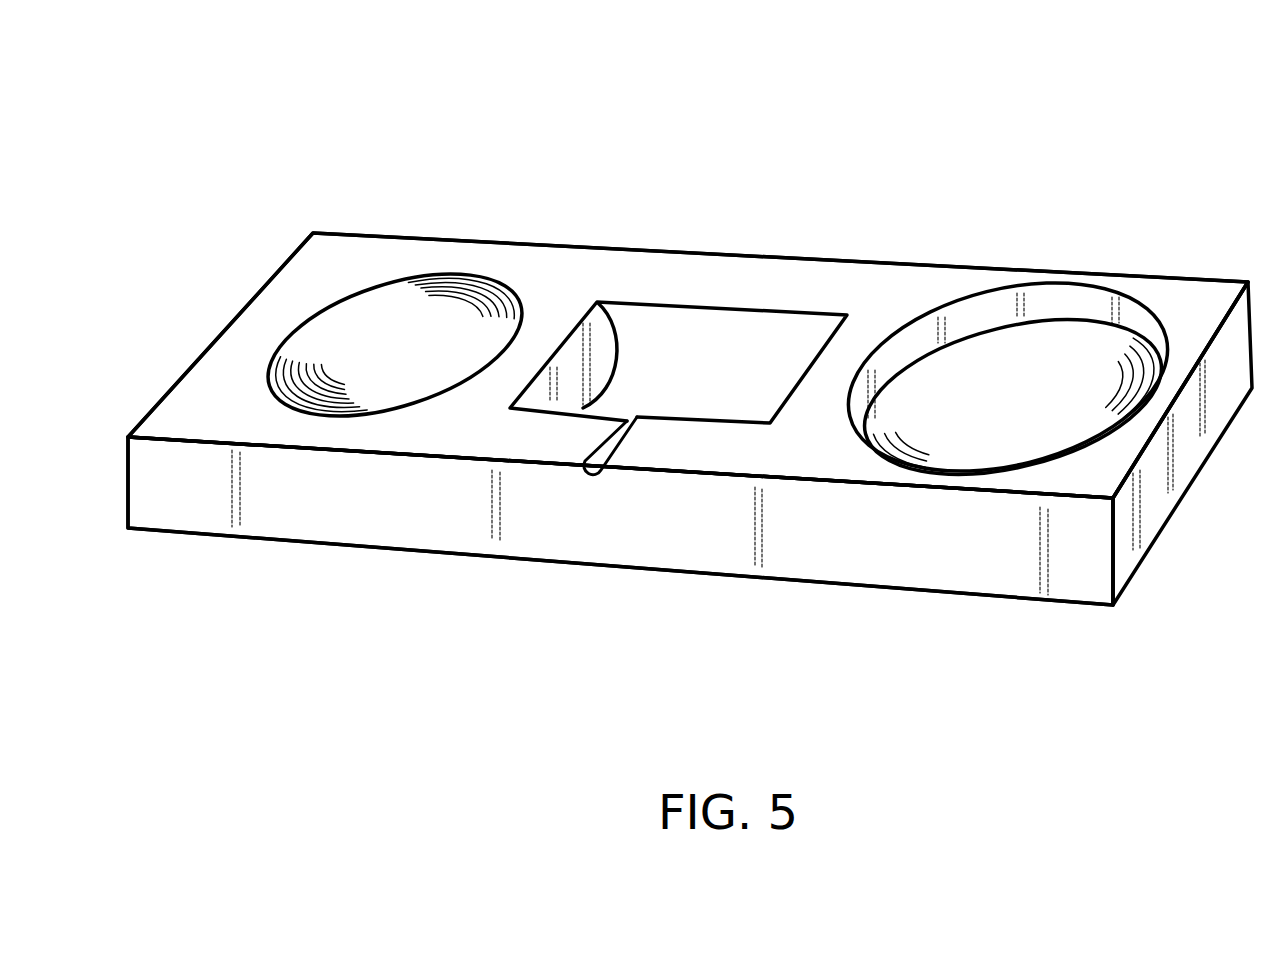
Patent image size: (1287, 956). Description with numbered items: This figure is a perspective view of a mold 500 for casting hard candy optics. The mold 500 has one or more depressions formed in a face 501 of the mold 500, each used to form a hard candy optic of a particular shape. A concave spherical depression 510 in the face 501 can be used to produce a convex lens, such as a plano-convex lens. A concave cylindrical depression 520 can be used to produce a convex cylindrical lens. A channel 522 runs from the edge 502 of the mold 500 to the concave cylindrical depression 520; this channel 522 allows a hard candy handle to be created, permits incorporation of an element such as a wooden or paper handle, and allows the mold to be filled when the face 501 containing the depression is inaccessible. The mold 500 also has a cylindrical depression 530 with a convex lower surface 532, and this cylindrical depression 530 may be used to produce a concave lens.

The mold 500 is at (950, 100).
The face 501 is at (345, 249).
The edge 502 is at (543, 463).
The concave spherical depression 510 is at (455, 270).
The concave cylindrical depression 520 is at (672, 303).
The channel 522 is at (628, 443).
The cylindrical depression 530 is at (1142, 303).
The convex lower surface 532 is at (1008, 383).